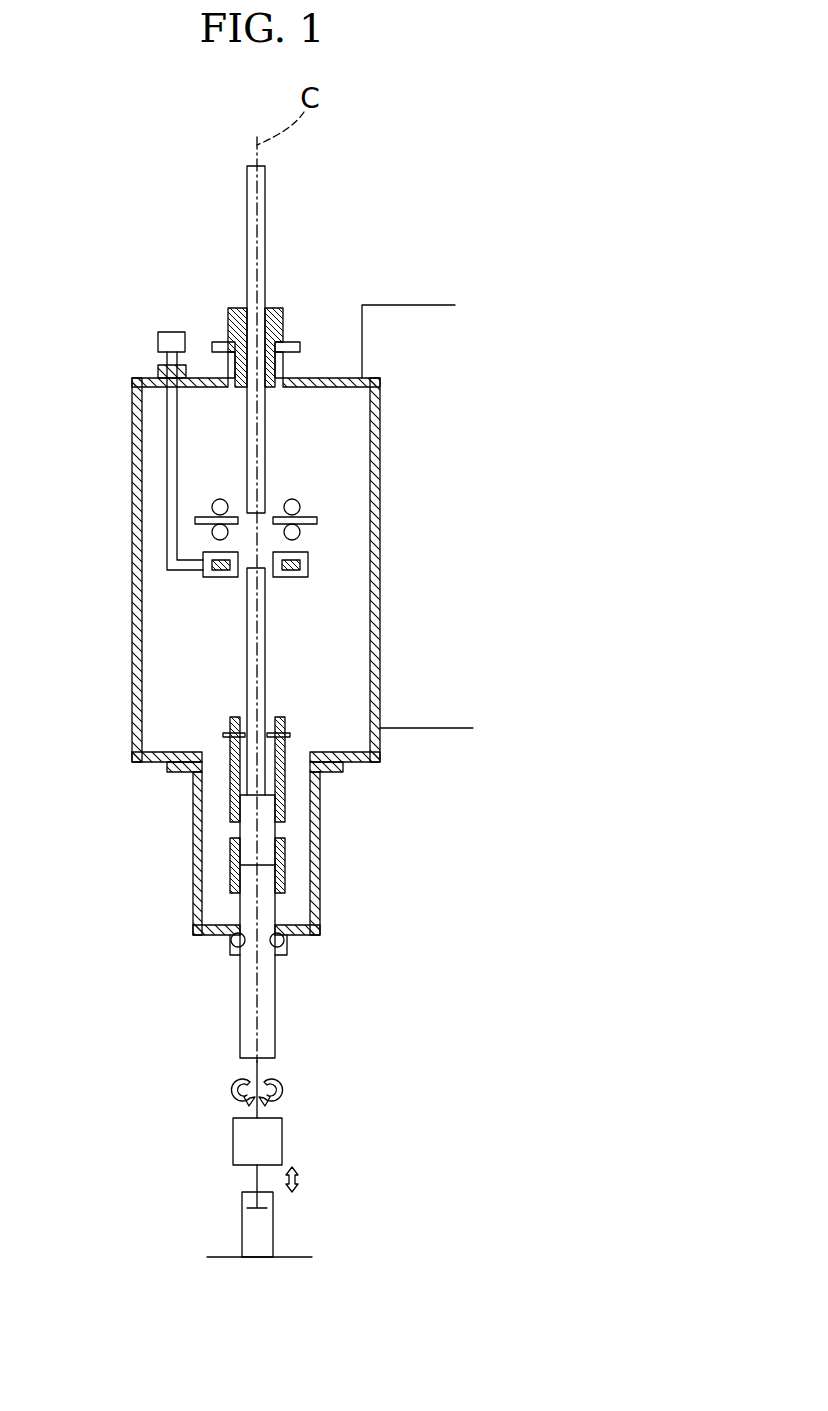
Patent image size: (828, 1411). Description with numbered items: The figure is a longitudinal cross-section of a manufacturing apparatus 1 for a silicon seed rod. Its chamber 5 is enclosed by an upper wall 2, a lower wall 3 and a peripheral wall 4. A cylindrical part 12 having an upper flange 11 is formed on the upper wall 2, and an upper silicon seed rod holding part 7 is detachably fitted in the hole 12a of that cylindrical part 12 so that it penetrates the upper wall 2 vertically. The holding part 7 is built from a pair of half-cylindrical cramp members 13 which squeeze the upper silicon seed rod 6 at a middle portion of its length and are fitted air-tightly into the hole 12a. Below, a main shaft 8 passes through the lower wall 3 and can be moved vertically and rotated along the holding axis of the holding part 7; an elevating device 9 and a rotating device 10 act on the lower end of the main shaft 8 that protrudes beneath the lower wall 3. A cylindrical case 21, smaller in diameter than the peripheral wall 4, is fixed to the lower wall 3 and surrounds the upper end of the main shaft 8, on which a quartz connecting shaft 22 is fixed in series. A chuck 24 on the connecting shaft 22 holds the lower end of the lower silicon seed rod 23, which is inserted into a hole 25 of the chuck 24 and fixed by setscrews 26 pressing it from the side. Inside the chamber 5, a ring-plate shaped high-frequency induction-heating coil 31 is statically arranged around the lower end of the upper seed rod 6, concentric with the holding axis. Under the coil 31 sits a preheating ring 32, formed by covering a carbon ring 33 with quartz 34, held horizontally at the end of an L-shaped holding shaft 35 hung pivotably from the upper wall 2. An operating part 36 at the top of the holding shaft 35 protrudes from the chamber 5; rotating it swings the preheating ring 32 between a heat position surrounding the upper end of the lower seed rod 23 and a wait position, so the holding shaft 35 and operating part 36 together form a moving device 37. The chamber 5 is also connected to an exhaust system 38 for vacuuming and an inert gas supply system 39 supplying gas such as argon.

The manufacturing apparatus 1 is at (447, 363).
The upper wall 2 is at (140, 378).
The lower wall 3 is at (358, 763).
The peripheral wall 4 is at (381, 641).
The chamber 5 is at (362, 467).
The silicon seed rod 6 is at (262, 232).
The upper silicon seed rod holding part 7 is at (230, 300).
The main shaft 8 is at (246, 1003).
The elevating device 9 is at (274, 1225).
The rotating device 10 is at (272, 1133).
The upper flange 11 is at (296, 342).
The cylindrical part 12 is at (286, 375).
The hole 12a is at (226, 340).
The cramp members 13 is at (278, 300).
The cylindrical case 21 is at (193, 845).
The connecting shaft 22 is at (272, 830).
The silicon seed rod 23 is at (247, 640).
The chuck 24 is at (283, 718).
The hole 25 is at (233, 718).
The setscrews 26 is at (227, 735).
The high-frequency induction-heating coil 31 is at (293, 500).
The preheating ring 32 is at (309, 560).
The carbon ring 33 is at (285, 568).
The quartz 34 is at (306, 577).
The holding shaft 35 is at (167, 450).
The operating part 36 is at (171, 333).
The moving device 37 is at (149, 329).
The exhaust system 38 is at (452, 730).
The inert gas supply system 39 is at (408, 303).